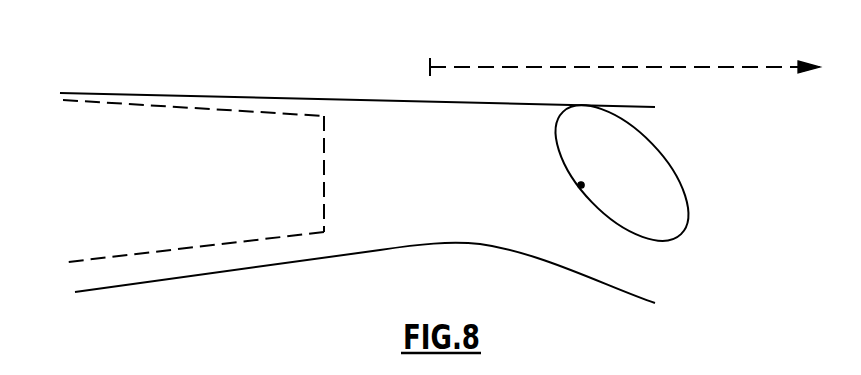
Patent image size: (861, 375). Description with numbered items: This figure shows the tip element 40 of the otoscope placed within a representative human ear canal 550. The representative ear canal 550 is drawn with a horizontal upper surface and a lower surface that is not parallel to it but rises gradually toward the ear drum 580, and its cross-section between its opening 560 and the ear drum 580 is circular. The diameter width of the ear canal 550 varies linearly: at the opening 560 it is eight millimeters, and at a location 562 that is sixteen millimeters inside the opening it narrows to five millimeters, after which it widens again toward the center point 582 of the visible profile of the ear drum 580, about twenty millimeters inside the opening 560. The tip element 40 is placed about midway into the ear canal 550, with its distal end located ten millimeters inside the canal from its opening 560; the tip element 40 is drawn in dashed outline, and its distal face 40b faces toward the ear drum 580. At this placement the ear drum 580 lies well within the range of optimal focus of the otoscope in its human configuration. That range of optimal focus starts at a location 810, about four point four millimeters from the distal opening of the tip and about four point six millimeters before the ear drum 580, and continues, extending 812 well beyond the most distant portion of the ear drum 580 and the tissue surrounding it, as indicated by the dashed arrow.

The tip element 40 is at (177, 200).
The surface of component 40b is at (328, 193).
The representative ear canal 550 is at (413, 197).
The opening 560 is at (68, 124).
The location 562 is at (457, 233).
The ear drum 580 is at (643, 192).
The center point 582 is at (581, 185).
The location 810 is at (430, 59).
The extending 812 is at (573, 66).